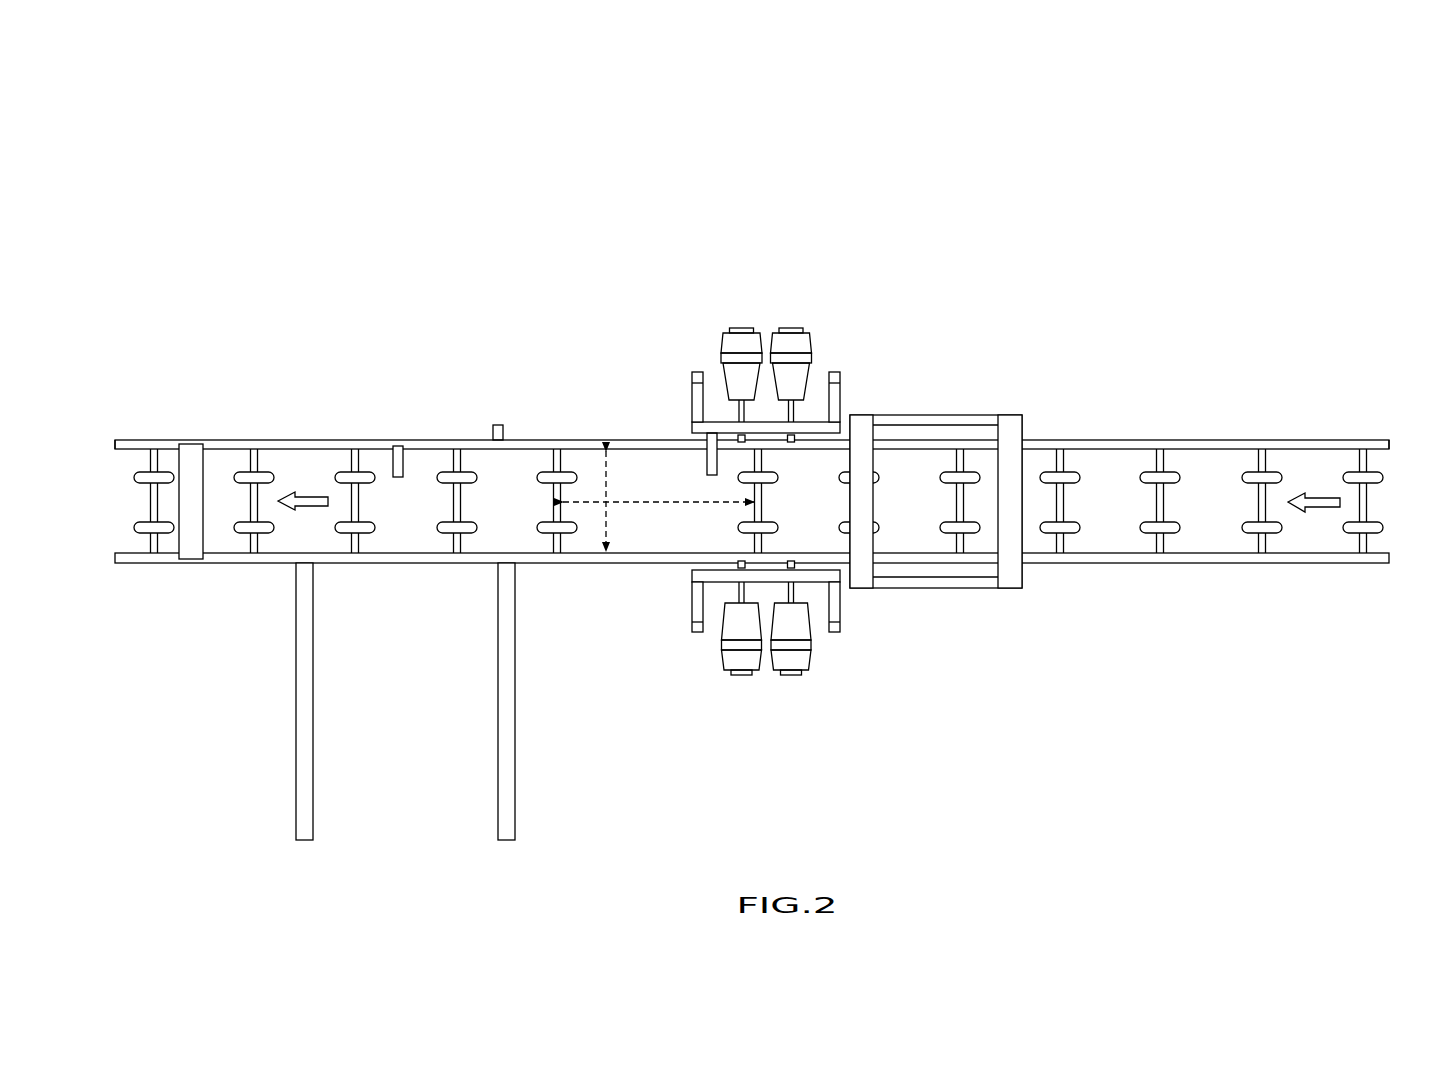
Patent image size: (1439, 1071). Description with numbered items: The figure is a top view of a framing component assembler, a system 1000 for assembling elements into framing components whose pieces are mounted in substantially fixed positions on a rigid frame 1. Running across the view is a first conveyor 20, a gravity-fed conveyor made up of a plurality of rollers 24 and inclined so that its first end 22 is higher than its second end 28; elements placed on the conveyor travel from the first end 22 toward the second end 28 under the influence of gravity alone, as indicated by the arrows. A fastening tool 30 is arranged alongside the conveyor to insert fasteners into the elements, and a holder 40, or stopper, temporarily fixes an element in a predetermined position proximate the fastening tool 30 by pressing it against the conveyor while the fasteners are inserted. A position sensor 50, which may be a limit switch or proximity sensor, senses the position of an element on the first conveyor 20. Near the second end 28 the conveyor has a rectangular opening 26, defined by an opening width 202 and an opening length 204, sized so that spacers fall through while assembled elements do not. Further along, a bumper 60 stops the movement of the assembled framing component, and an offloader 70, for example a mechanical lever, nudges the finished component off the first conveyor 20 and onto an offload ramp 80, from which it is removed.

The system for assembling framing components 1000 is at (797, 148).
The frame 1 is at (1008, 408).
The first conveyor 20 is at (1201, 438).
The first end 22 is at (1389, 446).
The rollers 24 is at (142, 480).
The opening 26 is at (643, 468).
The second end 28 is at (118, 446).
The fastening tool 30 is at (766, 322).
The holder 40 is at (707, 466).
The position sensor 50 is at (503, 433).
The bumper 60 is at (197, 462).
The offloader 70 is at (403, 466).
The offload ramp 80 is at (305, 774).
The opening width 202 is at (606, 480).
The opening length 204 is at (652, 505).